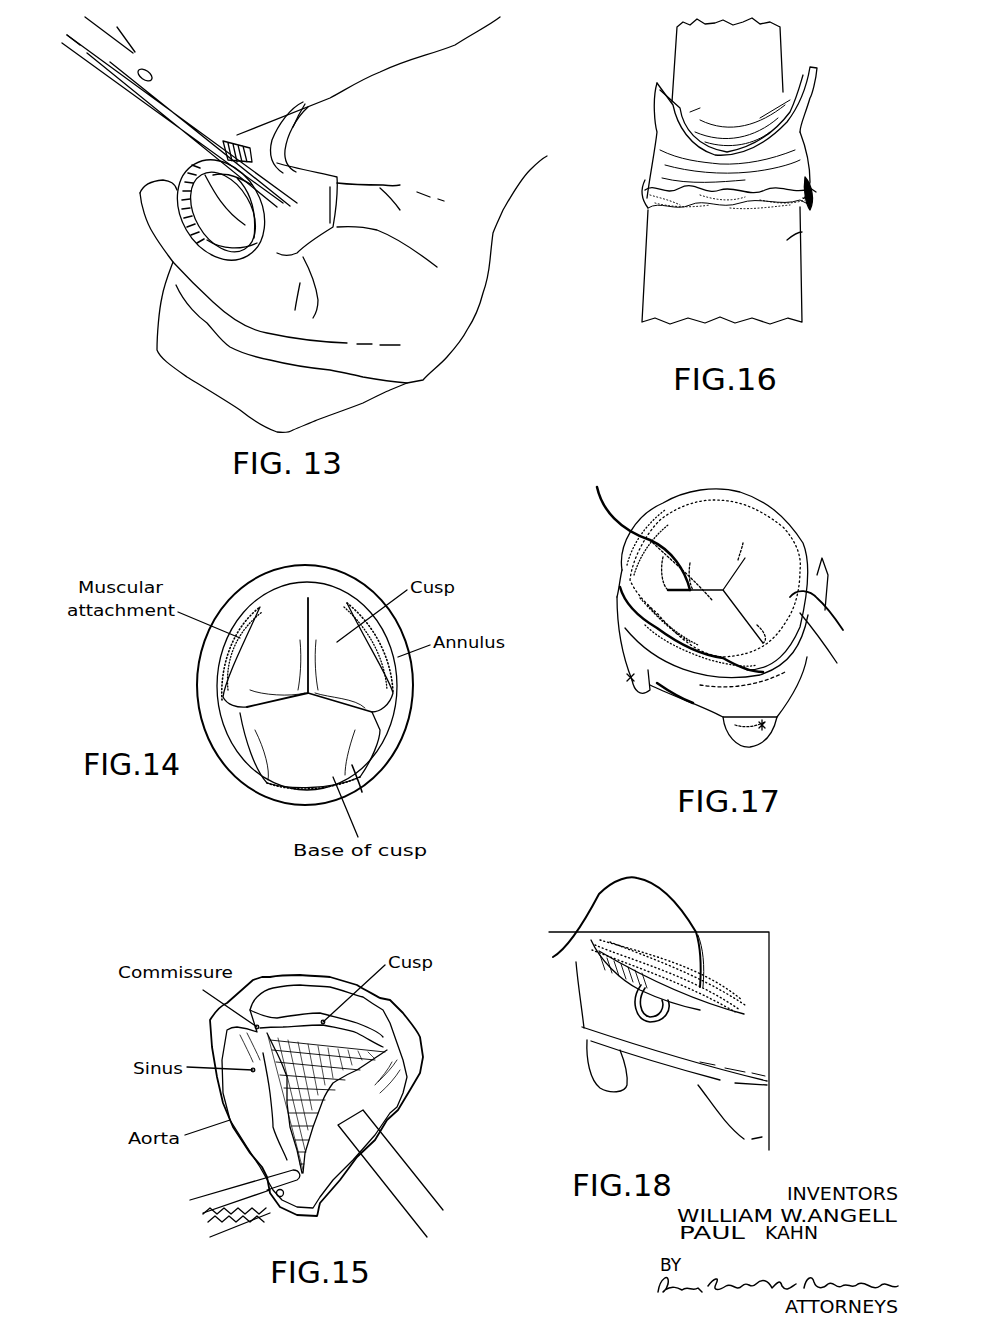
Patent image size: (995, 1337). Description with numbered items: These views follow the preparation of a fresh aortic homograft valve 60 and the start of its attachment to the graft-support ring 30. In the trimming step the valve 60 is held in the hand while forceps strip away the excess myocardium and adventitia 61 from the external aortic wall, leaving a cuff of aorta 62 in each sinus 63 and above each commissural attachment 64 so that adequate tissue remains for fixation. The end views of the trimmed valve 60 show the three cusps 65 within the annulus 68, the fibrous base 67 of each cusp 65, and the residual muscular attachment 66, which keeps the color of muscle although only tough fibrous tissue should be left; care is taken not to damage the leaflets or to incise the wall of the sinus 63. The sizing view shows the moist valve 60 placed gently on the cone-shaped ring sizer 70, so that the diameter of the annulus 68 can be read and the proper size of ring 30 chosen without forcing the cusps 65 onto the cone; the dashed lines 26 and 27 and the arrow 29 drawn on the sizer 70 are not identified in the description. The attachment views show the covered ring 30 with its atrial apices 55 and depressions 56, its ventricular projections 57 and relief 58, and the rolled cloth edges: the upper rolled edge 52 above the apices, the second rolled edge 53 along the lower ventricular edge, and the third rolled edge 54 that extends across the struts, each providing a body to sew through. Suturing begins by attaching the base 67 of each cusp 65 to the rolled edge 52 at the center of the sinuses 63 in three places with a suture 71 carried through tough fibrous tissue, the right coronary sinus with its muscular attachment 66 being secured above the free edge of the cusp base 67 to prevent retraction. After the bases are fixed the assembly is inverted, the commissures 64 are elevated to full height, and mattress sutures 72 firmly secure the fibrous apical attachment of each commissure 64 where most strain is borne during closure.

In FIG. 16, the aorta (upper section) 26 is at (768, 50).
In FIG. 16, the aorta cut line 27 is at (681, 96).
In FIG. 16, the suture line 29 is at (832, 194).
In FIG. 16, the graft-support ring 30 is at (663, 248).
In FIG. 17, the graft-support ring 30 is at (787, 708).
In FIG. 18, the graft-support ring 30 is at (695, 1070).
In FIG. 17, the rolled edge 52 is at (620, 607).
In FIG. 18, the rolled edge 52 is at (722, 1008).
In FIG. 17, the second rolled edge 53 is at (743, 733).
In FIG. 18, the second rolled edge 53 is at (618, 1093).
In FIG. 17, the third rolled edge 54 is at (790, 697).
In FIG. 18, the third rolled edge 54 is at (698, 1089).
In FIG. 17, the atrial apices 55 is at (688, 490).
In FIG. 18, the atrial apices 55 is at (652, 1028).
In FIG. 17, the depressions 56 is at (763, 508).
In FIG. 17, the ventricular projections 57 is at (642, 690).
In FIG. 17, the relief 58 is at (677, 700).
In FIG. 13, the homograft valve 60 is at (251, 118).
In FIG. 16, the homograft valve 60 is at (817, 126).
In FIG. 17, the homograft valve 60 is at (809, 556).
In FIG. 14, the homograft valve 60 is at (425, 732).
In FIG. 15, the homograft valve 60 is at (408, 1129).
In FIG. 13, the excess myocardium and adventitia 61 is at (252, 152).
In FIG. 14, the cuff of aorta 62 is at (207, 678).
In FIG. 15, the cuff of aorta 62 is at (223, 1113).
In FIG. 15, the sinus 63 is at (248, 1078).
In FIG. 13, the commissural attachment 64 is at (302, 112).
In FIG. 15, the commissural attachment 64 is at (240, 1020).
In FIG. 17, the cusp 65 is at (713, 560).
In FIG. 14, the cusp 65 is at (280, 666).
In FIG. 15, the cusp 65 is at (313, 1015).
In FIG. 14, the muscular attachment 66 is at (233, 647).
In FIG. 17, the base of cusp 67 is at (657, 628).
In FIG. 14, the base of cusp 67 is at (362, 792).
In FIG. 18, the base of cusp 67 is at (597, 989).
In FIG. 16, the aortic homograft annulus 68 is at (648, 197).
In FIG. 14, the aortic homograft annulus 68 is at (400, 758).
In FIG. 16, the cone-shaped ring sizer 70 is at (787, 240).
In FIG. 17, the suture 71 is at (614, 520).
In FIG. 18, the suture 71 is at (624, 874).
In FIG. 17, the mattress sutures 72 is at (630, 677).